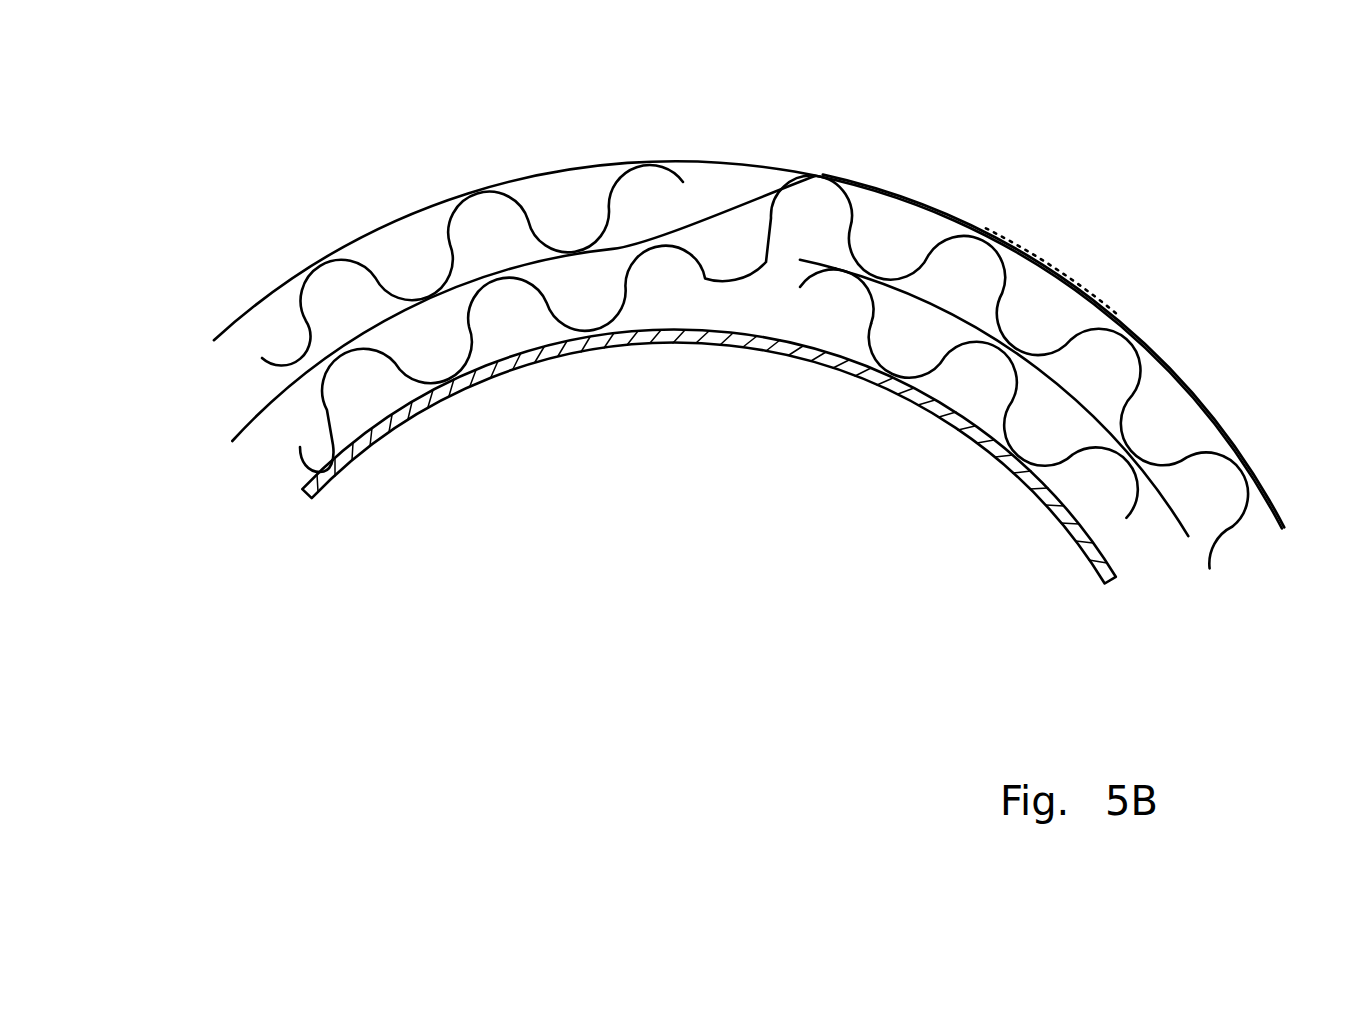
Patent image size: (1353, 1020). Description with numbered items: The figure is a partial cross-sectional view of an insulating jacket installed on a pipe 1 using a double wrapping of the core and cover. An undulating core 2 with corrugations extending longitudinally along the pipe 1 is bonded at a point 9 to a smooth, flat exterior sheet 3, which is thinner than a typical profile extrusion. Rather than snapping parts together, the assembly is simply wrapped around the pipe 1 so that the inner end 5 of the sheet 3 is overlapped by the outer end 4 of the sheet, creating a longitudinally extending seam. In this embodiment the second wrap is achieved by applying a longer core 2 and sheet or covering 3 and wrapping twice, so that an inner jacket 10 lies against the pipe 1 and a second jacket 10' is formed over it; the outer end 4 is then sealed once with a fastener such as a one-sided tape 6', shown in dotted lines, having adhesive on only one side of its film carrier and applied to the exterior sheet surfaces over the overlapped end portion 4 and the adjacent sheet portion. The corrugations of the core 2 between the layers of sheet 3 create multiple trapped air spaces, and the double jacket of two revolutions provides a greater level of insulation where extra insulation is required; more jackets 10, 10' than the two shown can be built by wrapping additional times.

The pipe 1 is at (883, 393).
The core 2 is at (303, 320).
The sheet 3 is at (783, 167).
The outer end 4 is at (1000, 243).
The inner end 5 is at (800, 265).
The one-sided tape 6' is at (1162, 193).
The bonding point 9 is at (868, 300).
The jacket 10 is at (645, 397).
The second jacket 10' is at (360, 332).